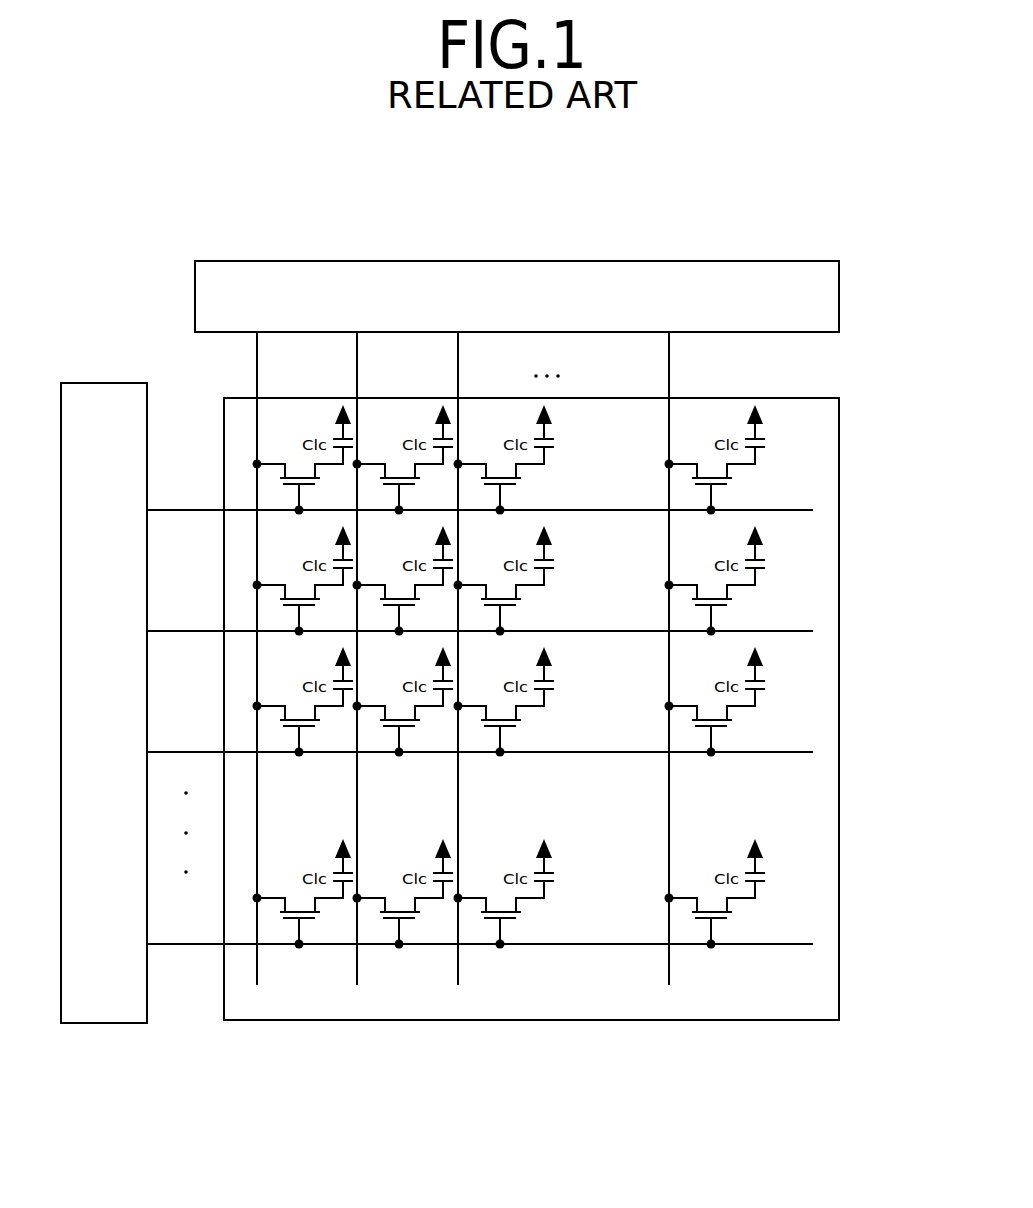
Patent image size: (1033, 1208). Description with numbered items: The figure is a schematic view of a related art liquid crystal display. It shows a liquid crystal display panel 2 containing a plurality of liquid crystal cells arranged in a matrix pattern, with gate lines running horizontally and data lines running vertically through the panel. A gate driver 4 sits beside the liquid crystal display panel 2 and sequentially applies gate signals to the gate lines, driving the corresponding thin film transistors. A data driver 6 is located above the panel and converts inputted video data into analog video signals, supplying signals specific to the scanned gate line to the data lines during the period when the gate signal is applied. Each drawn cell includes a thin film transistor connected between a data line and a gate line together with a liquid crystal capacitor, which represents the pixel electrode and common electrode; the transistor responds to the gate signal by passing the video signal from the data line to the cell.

The liquid crystal display panel 2 is at (839, 425).
The gate driver 4 is at (99, 1023).
The data driver 6 is at (708, 261).